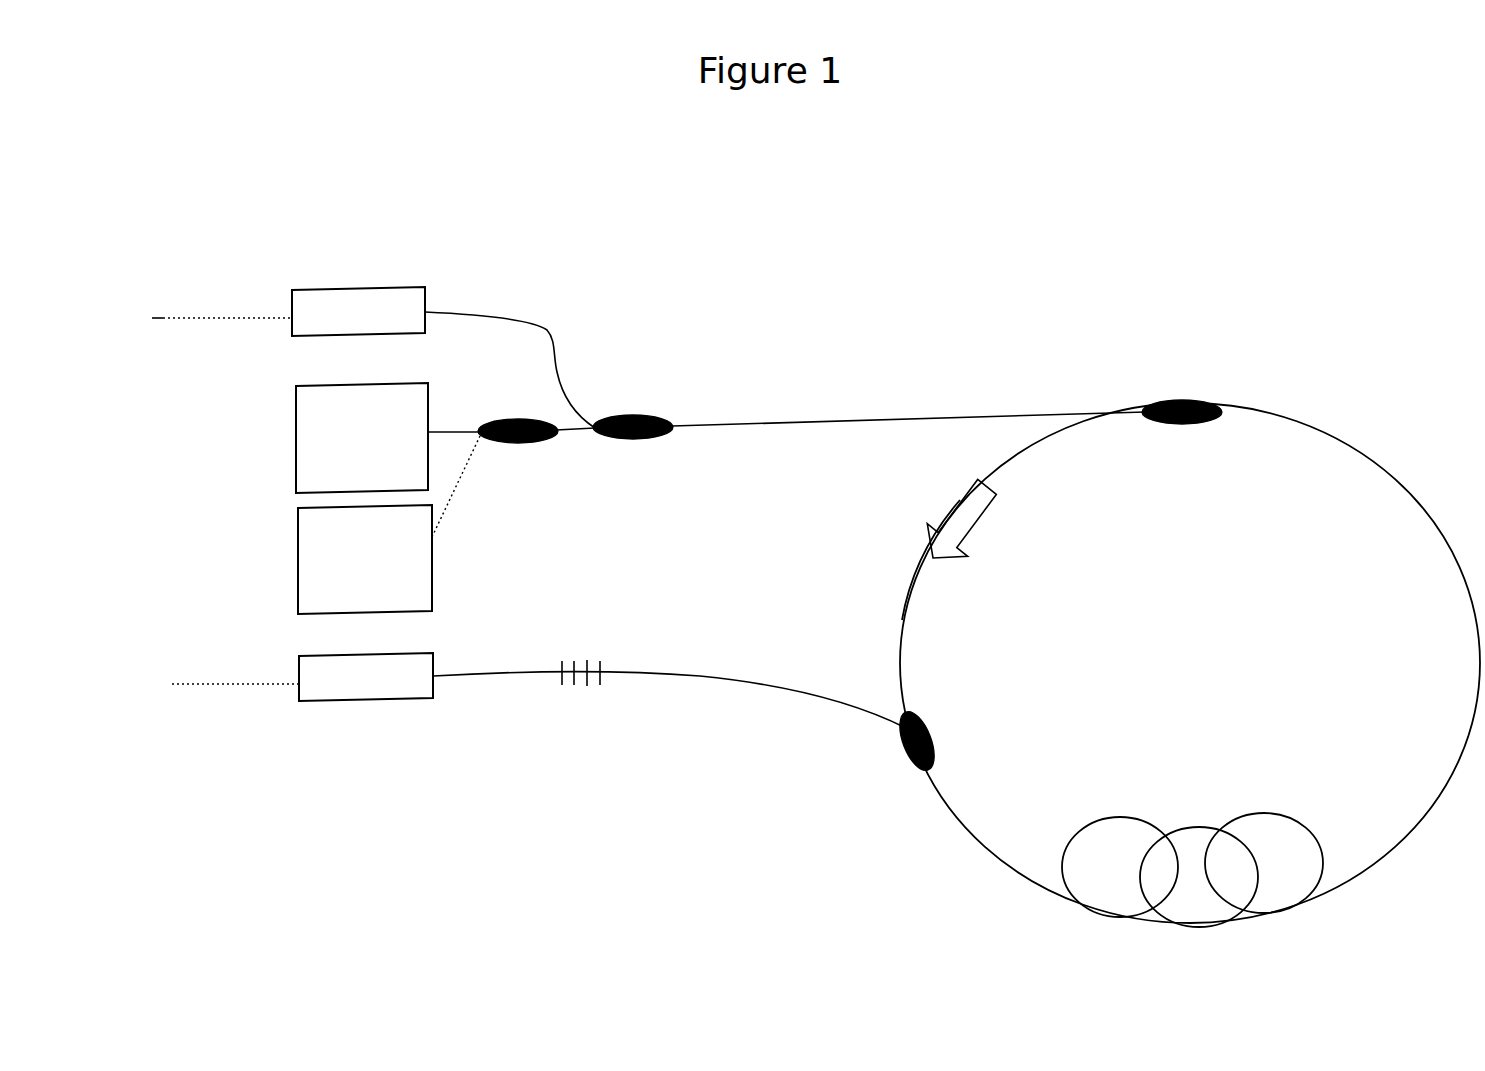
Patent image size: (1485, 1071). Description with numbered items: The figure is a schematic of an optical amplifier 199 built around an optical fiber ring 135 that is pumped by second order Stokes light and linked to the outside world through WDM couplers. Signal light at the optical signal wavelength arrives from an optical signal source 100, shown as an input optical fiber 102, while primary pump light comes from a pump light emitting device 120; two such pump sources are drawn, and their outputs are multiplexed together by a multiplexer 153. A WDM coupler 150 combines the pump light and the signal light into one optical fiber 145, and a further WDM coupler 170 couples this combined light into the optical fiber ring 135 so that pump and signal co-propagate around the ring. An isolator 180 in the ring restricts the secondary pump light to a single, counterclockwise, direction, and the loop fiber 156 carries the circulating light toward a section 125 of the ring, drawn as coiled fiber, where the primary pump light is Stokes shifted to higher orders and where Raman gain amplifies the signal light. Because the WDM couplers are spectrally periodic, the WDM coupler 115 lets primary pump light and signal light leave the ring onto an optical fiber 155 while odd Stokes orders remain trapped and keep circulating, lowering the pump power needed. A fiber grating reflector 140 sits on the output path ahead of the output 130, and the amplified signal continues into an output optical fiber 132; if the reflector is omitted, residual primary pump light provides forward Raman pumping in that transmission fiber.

The optical signal source 100 is at (332, 286).
The input optical fiber 102 is at (205, 322).
The pump light emitting device 120 is at (294, 450).
The multiplexer 153 is at (504, 447).
The WDM coupler 150 is at (641, 416).
The optical fiber 145 is at (750, 420).
The WDM coupler 170 is at (1181, 398).
The optical amplifier 199 is at (1040, 290).
The optical fiber ring 135 is at (1355, 454).
The isolator 180 is at (984, 531).
The loop fiber section 156 is at (920, 584).
The optical fiber 155 is at (875, 717).
The WDM coupler 115 is at (903, 756).
The section 125 is at (1230, 810).
The fiber grating reflector 140 is at (583, 690).
The output 130 is at (342, 706).
The output optical fiber 132 is at (211, 690).